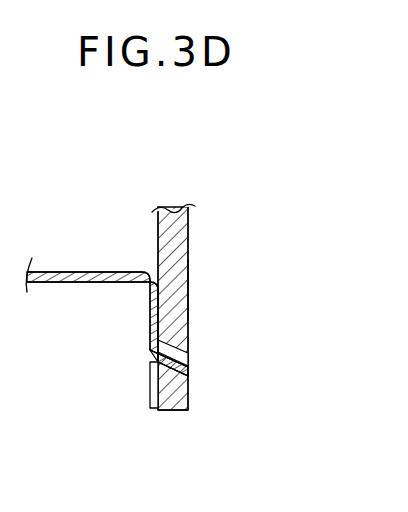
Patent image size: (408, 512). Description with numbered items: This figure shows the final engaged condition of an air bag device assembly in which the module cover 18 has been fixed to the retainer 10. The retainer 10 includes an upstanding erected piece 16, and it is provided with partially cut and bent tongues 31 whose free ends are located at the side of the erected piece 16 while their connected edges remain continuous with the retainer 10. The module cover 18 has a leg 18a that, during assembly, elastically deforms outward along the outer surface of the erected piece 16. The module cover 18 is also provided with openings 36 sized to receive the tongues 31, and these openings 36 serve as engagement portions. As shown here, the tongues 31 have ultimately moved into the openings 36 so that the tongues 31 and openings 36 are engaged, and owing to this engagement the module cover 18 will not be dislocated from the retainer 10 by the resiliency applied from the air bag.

The retainer 10 is at (86, 271).
The erected piece 16 is at (150, 330).
The module cover 18 is at (190, 235).
The leg 18a is at (191, 290).
The tongue 31 is at (191, 362).
The opening 36 is at (191, 360).